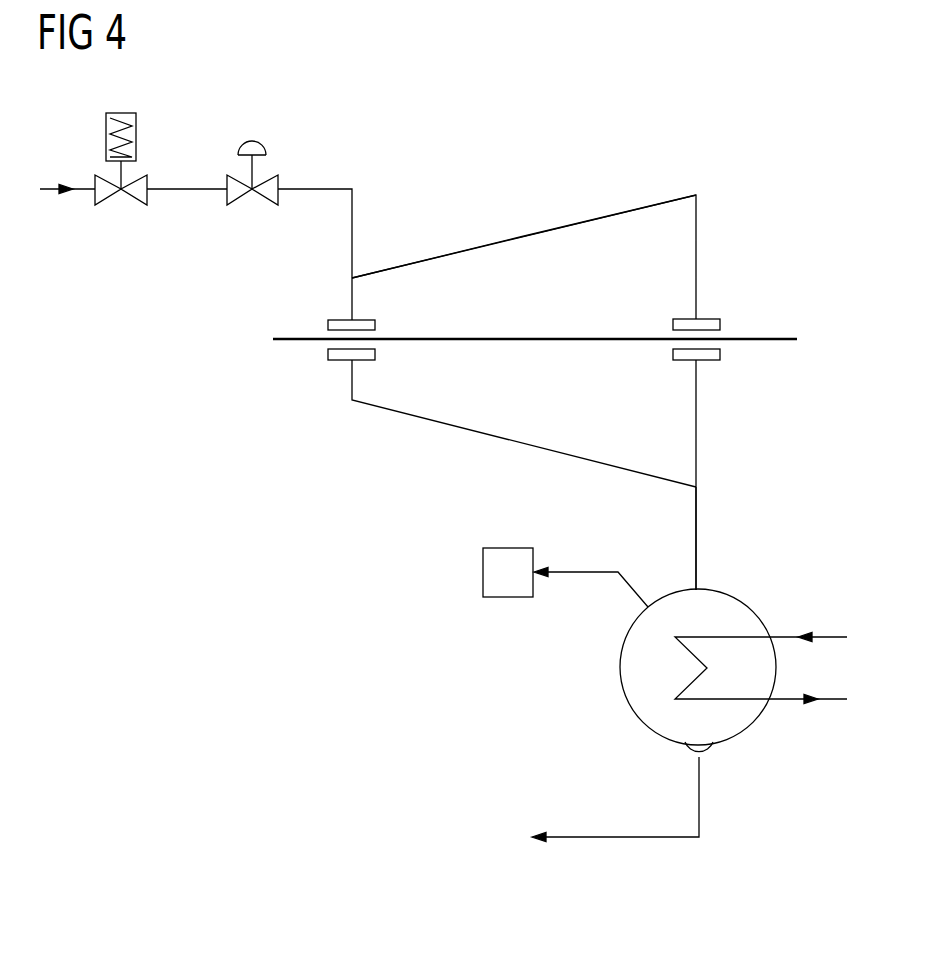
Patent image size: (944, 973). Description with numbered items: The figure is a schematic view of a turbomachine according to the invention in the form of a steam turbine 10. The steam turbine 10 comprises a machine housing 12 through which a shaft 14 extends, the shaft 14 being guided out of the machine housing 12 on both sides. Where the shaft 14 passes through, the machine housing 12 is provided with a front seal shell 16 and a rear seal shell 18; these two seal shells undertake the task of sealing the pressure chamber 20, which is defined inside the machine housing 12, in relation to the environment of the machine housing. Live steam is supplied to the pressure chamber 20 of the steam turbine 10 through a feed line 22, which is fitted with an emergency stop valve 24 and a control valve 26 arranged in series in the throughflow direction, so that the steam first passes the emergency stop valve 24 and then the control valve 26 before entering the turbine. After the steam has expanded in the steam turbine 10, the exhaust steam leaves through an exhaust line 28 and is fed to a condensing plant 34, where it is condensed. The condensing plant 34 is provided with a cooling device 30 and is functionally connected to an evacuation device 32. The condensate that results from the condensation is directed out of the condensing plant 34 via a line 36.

The steam turbine 10 is at (577, 178).
The machine housing 12 is at (446, 256).
The shaft 14 is at (770, 337).
The front seal shell 16 is at (335, 375).
The rear seal shell 18 is at (718, 303).
The pressure chamber 20 is at (560, 258).
The feed line 22 is at (323, 187).
The emergency stop valve 24 is at (135, 207).
The control valve 26 is at (266, 207).
The exhaust line 28 is at (698, 540).
The cooling device 30 is at (830, 637).
The evacuation device 32 is at (483, 572).
The condensing plant 34 is at (603, 684).
The line 36 is at (622, 840).